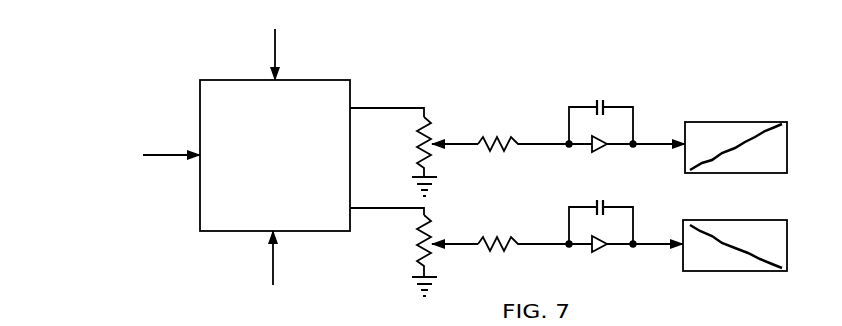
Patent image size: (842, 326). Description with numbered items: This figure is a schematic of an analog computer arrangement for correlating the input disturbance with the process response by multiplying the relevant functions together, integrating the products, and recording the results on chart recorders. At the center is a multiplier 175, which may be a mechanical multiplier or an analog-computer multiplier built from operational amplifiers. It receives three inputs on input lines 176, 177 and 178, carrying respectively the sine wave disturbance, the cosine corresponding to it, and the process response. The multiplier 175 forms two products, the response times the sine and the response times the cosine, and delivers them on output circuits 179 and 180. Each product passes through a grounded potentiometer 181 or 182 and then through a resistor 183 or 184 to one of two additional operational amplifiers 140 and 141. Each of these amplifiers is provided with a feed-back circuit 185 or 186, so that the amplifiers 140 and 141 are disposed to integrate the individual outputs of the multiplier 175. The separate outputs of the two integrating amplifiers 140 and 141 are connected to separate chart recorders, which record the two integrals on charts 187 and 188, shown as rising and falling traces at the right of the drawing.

The multiplier 175 is at (207, 232).
The input line 176 is at (277, 53).
The input line 177 is at (275, 259).
The input line 178 is at (158, 157).
The output circuit 179 is at (393, 108).
The output circuit 180 is at (385, 209).
The grounded potentiometer 181 is at (417, 150).
The grounded potentiometer 182 is at (417, 250).
The resistor 183 is at (502, 137).
The resistor 184 is at (503, 230).
The operational amplifier 141 is at (598, 152).
The operational amplifier 140 is at (598, 252).
The feed-back circuit 185 is at (617, 107).
The feed-back circuit 186 is at (623, 206).
The chart 187 is at (780, 108).
The chart 188 is at (765, 218).